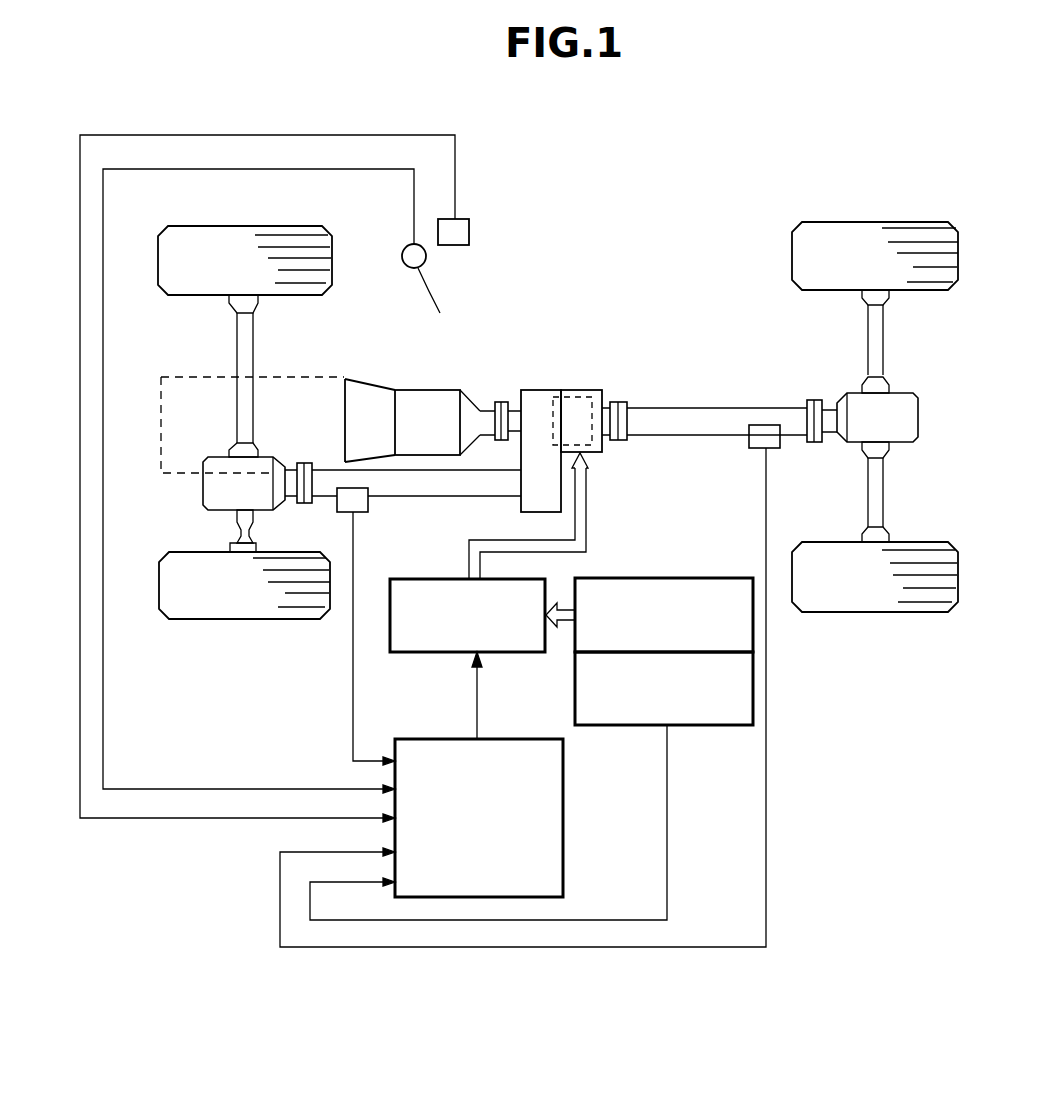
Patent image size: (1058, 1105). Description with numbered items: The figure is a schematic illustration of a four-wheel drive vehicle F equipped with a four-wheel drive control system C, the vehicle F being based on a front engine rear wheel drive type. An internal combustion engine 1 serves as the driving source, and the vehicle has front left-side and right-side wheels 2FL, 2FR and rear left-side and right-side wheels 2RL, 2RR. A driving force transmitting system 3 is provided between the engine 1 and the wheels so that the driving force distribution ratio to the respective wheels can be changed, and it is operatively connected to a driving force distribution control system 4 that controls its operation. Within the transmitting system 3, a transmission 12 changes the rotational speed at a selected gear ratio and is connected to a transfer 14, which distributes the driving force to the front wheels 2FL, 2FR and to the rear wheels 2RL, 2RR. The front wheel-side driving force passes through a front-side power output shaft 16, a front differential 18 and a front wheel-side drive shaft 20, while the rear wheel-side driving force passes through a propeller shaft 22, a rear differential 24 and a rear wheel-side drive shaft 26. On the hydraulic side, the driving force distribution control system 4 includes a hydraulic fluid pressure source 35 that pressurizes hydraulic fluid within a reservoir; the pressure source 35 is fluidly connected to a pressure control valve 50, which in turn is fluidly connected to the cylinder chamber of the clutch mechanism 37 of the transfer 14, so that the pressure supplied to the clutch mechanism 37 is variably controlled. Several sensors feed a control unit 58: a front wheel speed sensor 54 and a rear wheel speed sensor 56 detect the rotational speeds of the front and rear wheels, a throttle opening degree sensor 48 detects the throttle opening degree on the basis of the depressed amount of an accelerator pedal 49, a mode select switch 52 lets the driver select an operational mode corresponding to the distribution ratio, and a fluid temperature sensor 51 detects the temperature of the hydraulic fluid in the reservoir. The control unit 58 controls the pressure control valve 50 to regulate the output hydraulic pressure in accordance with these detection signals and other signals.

The internal combustion engine 1 is at (297, 375).
The front right-side wheel 2FR is at (240, 242).
The front left-side wheel 2FL is at (247, 620).
The rear right-side wheel 2RR is at (883, 222).
The rear left-side wheel 2RL is at (880, 600).
The driving force transmitting system 3 is at (562, 330).
The driving force distribution control system 4 is at (531, 695).
The transmission 12 is at (414, 400).
The transfer 14 is at (530, 389).
The front-side power output shaft 16 is at (405, 497).
The front differential 18 is at (203, 505).
The front wheel-side drive shaft 20 is at (237, 335).
The propeller shaft 22 is at (716, 406).
The rear differential 24 is at (908, 393).
The rear wheel-side drive shaft 26 is at (885, 487).
The hydraulic fluid pressure source 35 is at (680, 578).
The clutch mechanism 37 is at (585, 395).
The throttle opening degree sensor 48 is at (405, 247).
The accelerator pedal 49 is at (440, 300).
The pressure control valve 50 is at (520, 652).
The fluid temperature sensor 51 is at (705, 727).
The mode select switch 52 is at (470, 230).
The front wheel speed sensor 54 is at (337, 510).
The rear wheel speed sensor 56 is at (780, 449).
The control unit 58 is at (563, 820).
The four-wheel drive vehicle F is at (665, 262).
The four-wheel drive control system C is at (810, 806).